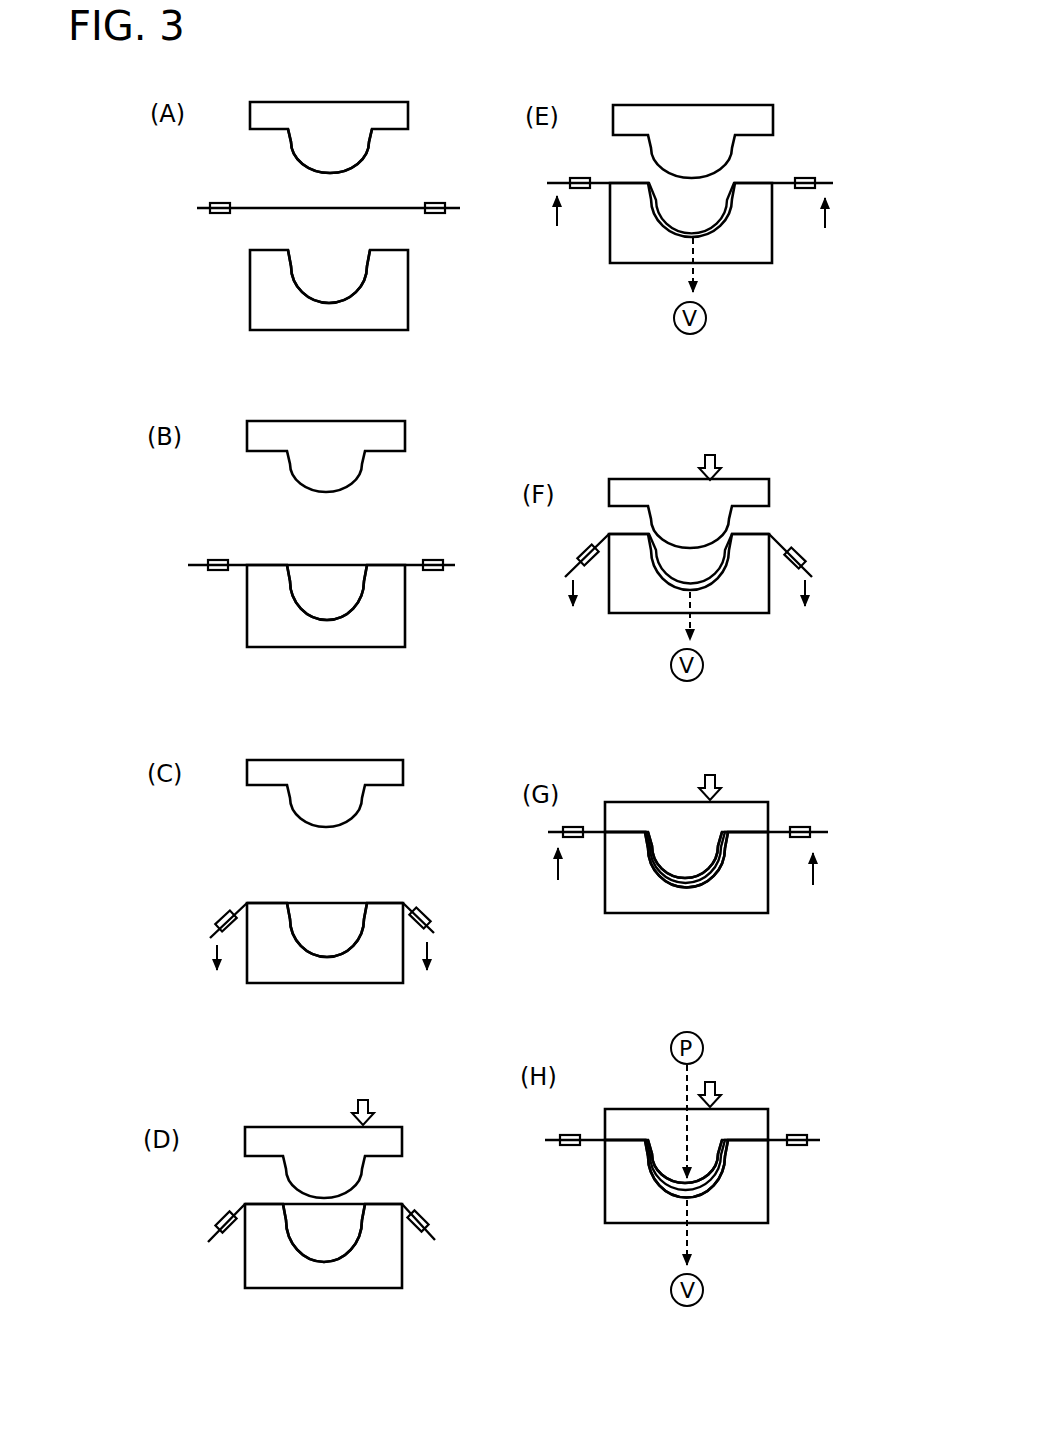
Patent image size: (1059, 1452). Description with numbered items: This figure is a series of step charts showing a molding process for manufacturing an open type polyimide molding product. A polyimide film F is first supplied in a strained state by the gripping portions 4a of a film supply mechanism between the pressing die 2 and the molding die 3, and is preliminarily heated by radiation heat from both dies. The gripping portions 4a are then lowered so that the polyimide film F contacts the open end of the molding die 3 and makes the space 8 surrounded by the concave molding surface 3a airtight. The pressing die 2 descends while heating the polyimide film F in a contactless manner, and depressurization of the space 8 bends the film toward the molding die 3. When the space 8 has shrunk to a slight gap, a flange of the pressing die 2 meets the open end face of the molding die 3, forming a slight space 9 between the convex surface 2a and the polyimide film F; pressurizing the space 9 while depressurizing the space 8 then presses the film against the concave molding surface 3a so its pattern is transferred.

The pressing die 2 is at (406, 104).
The convex surface 2a is at (298, 150).
The molding die 3 is at (410, 290).
The concave molding surface 3a is at (308, 294).
The gripping portions 4a is at (441, 206).
The space 8 is at (703, 240).
The space 9 is at (698, 860).
The polyimide film F is at (375, 208).